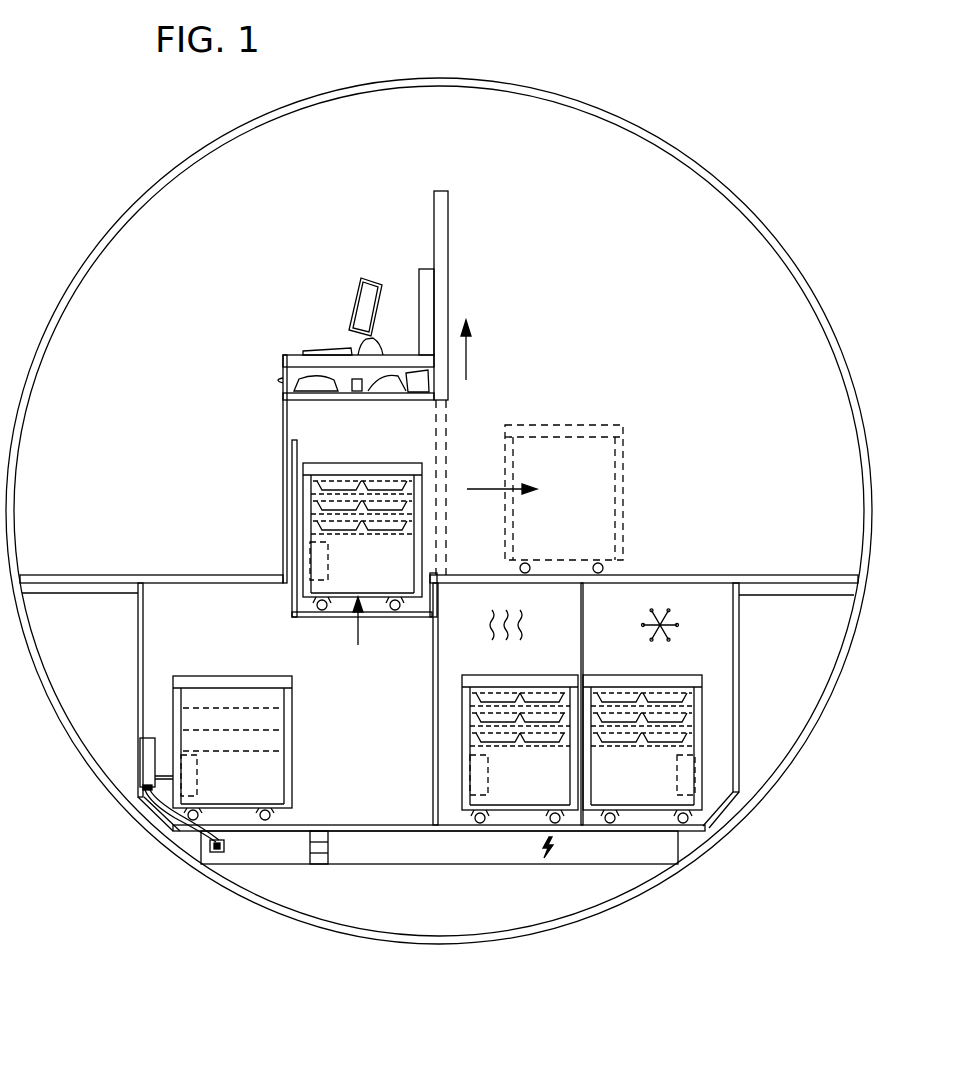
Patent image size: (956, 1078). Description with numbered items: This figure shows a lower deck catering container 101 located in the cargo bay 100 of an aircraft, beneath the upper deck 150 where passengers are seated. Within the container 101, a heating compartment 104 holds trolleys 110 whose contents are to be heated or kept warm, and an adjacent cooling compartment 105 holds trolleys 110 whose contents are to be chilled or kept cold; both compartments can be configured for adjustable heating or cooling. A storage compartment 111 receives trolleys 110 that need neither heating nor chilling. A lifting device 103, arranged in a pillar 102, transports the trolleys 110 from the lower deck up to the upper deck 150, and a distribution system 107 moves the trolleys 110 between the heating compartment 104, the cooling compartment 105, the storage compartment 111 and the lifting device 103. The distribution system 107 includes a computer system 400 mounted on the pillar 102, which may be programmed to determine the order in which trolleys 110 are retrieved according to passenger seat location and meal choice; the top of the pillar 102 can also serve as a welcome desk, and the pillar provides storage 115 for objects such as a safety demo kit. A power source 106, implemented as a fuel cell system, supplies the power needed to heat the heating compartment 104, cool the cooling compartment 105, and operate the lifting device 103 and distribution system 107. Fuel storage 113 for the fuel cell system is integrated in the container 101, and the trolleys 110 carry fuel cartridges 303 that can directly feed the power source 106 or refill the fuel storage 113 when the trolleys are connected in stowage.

The cargo bay 100 is at (441, 912).
The lower deck catering container 101 is at (122, 650).
The pillar 102 is at (265, 477).
The lifting device 103 is at (278, 613).
The heating compartment 104 is at (566, 612).
The cooling compartment 105 is at (630, 612).
The power source 106 is at (598, 850).
The distribution system 107 is at (341, 286).
The trolley 110 is at (328, 455).
The storage compartment 111 is at (194, 615).
The fuel storage 113 is at (271, 852).
The storage 115 is at (290, 373).
The upper deck 150 is at (770, 563).
The fuel cell system fuel cartridge 303 is at (310, 560).
The computer system 400 is at (378, 347).